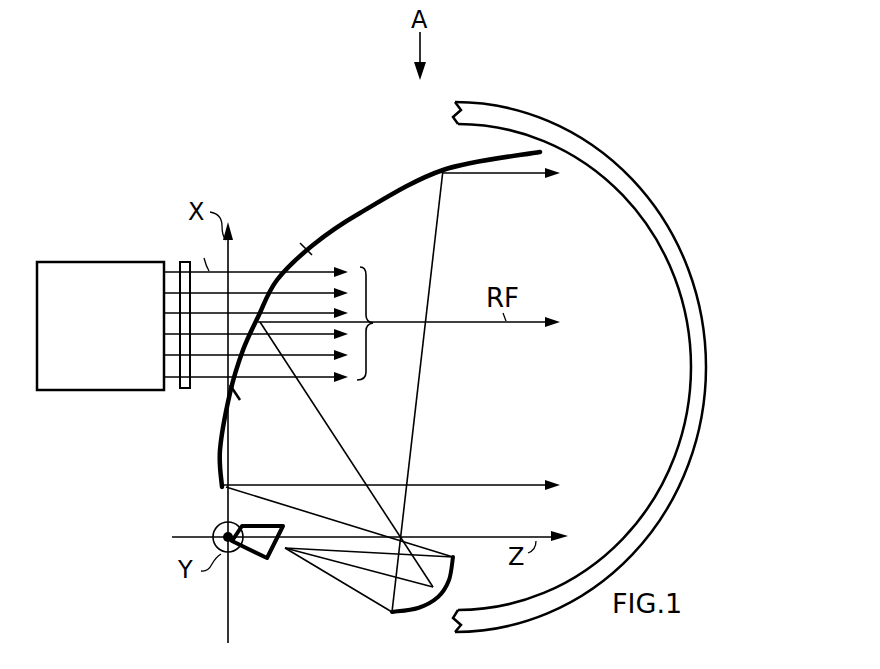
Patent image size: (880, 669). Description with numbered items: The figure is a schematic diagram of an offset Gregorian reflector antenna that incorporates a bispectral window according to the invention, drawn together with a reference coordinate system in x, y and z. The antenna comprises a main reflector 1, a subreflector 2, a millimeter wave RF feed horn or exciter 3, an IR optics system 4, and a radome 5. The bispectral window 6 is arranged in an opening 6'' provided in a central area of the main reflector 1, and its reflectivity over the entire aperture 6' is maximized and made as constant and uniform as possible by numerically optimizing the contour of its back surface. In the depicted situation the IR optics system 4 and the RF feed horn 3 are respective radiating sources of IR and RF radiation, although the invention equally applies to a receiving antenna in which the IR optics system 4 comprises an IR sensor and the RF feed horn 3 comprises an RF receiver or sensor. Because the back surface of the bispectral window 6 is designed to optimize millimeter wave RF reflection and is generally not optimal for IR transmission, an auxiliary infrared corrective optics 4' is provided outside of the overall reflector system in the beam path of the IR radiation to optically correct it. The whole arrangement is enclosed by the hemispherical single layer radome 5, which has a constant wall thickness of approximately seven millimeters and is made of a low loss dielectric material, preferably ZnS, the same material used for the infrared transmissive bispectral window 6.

The main reflector 1 is at (380, 199).
The subreflector 2 is at (408, 613).
The millimeter wave RF feed horn 3 is at (262, 561).
The IR optics system 4 is at (100, 309).
The auxiliary infrared corrective optics 4' is at (164, 308).
The radome 5 is at (700, 382).
The bispectral window 6 is at (256, 307).
The aperture 6' is at (379, 323).
The opening 6'' is at (277, 304).